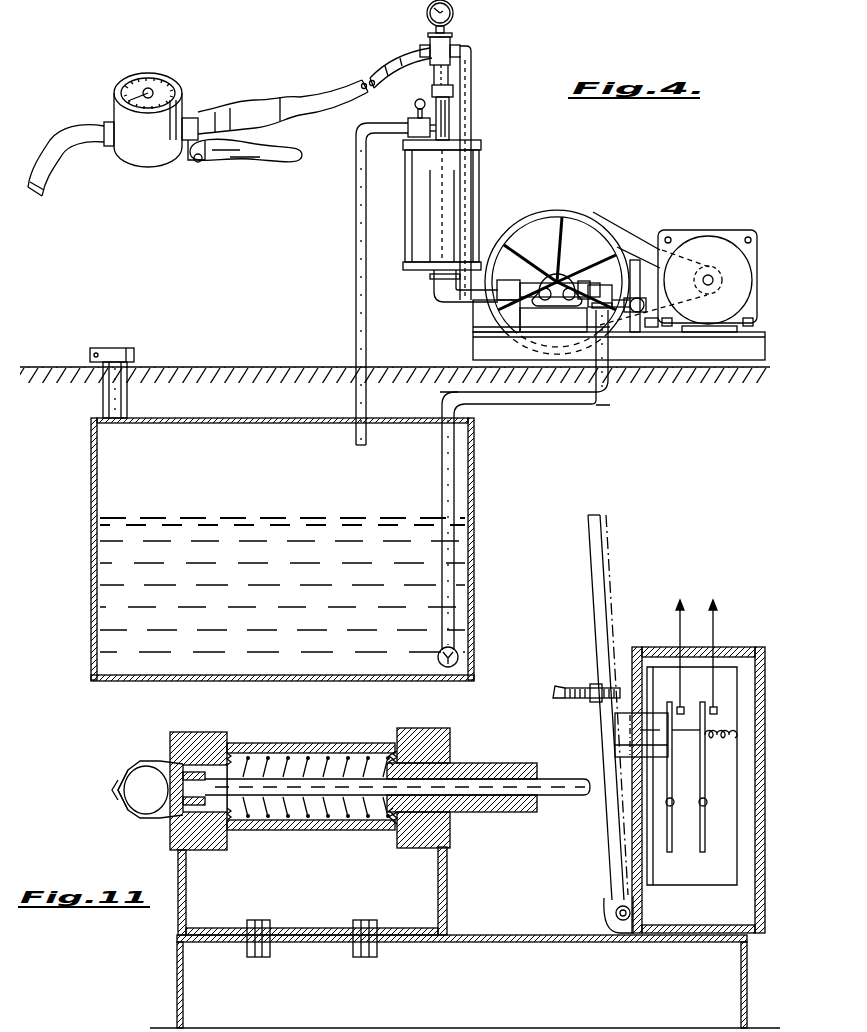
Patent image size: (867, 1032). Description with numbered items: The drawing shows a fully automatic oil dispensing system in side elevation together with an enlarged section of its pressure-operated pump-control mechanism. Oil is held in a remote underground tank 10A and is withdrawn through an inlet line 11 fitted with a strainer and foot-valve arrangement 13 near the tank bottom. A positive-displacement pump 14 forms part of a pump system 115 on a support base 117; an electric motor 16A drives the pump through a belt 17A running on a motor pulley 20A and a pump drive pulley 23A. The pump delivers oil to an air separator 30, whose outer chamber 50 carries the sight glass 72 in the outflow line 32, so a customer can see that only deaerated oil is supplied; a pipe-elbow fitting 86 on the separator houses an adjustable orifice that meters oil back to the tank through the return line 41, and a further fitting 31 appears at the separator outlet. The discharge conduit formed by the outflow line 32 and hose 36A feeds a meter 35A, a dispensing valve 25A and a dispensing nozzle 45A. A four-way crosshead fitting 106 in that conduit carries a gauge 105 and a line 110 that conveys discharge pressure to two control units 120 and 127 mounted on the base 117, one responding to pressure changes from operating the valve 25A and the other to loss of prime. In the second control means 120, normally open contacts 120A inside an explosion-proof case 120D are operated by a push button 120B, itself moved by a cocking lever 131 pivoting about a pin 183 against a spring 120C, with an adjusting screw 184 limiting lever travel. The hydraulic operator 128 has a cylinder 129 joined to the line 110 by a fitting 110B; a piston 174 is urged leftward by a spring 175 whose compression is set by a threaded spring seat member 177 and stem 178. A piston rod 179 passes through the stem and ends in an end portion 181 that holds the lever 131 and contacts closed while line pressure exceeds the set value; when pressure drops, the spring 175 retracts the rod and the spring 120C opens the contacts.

In FIG. 4, the underground tank 10A is at (92, 484).
In FIG. 4, the inlet line 11 is at (607, 345).
In FIG. 4, the strainer and foot-valve arrangement 13 is at (450, 668).
In FIG. 4, the positive-displacement pump 14 is at (548, 268).
In FIG. 4, the electric motor 16A is at (708, 236).
In FIG. 4, the belt 17A is at (615, 224).
In FIG. 4, the motor pulley 20A is at (707, 319).
In FIG. 4, the pump drive pulley 23A is at (562, 210).
In FIG. 4, the dispensing valve 25A is at (217, 125).
In FIG. 4, the air separator 30 is at (446, 200).
In FIG. 4, the elbow 31 is at (450, 300).
In FIG. 4, the outflow line 32 is at (455, 68).
In FIG. 4, the meter 35A is at (118, 84).
In FIG. 4, the hose 36A is at (370, 72).
In FIG. 4, the return line 41 is at (355, 266).
In FIG. 4, the dispensing nozzle 45A is at (45, 195).
In FIG. 4, the outer chamber 50 is at (453, 184).
In FIG. 4, the sight glass 72 is at (455, 118).
In FIG. 4, the fitting 86 is at (410, 122).
In FIG. 4, the gauge 105 is at (427, 13).
In FIG. 4, the crosshead fitting 106 is at (462, 45).
In FIG. 4, the line 110 is at (472, 80).
In FIG. 11, the fitting 110B is at (144, 762).
In FIG. 4, the pump system 115 is at (566, 190).
In FIG. 4, the support base 117 is at (718, 350).
In FIG. 4, the second control means 120 is at (650, 326).
In FIG. 11, the second control means 120 is at (658, 766).
In FIG. 11, the contacts 120A is at (685, 706).
In FIG. 11, the push button 120B is at (615, 736).
In FIG. 11, the spring 120C is at (727, 750).
In FIG. 11, the explosion-proof case 120D is at (657, 648).
In FIG. 4, the control unit 127 is at (483, 322).
In FIG. 11, the hydraulic operator 128 is at (178, 920).
In FIG. 4, the cylinder 129 is at (645, 301).
In FIG. 11, the cylinder 129 is at (322, 745).
In FIG. 4, the lever 131 is at (641, 270).
In FIG. 11, the lever 131 is at (588, 566).
In FIG. 11, the piston 174 is at (220, 822).
In FIG. 11, the spring 175 is at (324, 825).
In FIG. 11, the adjustable spring seat member 177 is at (384, 826).
In FIG. 11, the stem 178 is at (480, 764).
In FIG. 11, the piston rod 179 is at (552, 797).
In FIG. 11, the end portion 181 is at (590, 779).
In FIG. 11, the pin 183 is at (623, 920).
In FIG. 11, the adjusting screw 184 is at (575, 688).